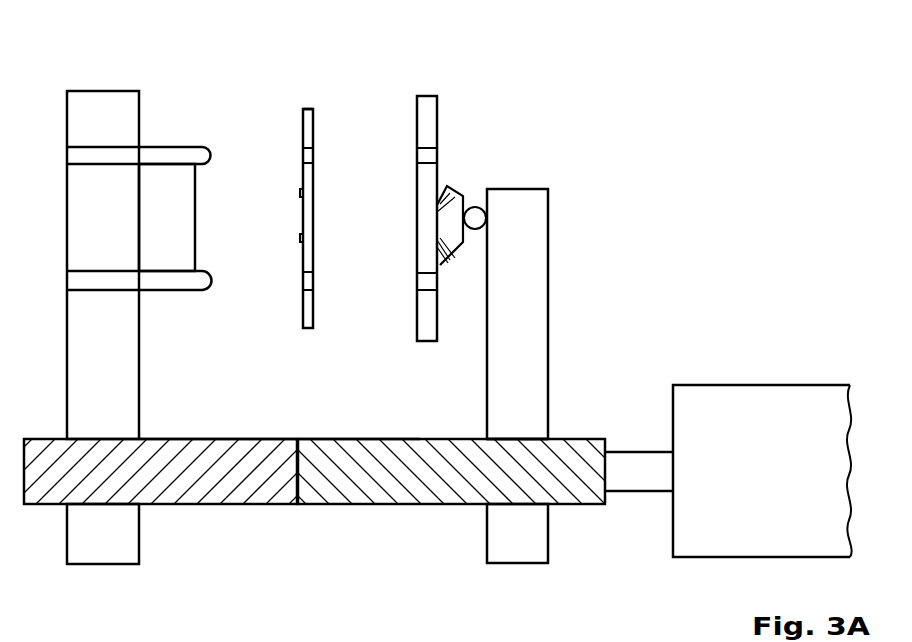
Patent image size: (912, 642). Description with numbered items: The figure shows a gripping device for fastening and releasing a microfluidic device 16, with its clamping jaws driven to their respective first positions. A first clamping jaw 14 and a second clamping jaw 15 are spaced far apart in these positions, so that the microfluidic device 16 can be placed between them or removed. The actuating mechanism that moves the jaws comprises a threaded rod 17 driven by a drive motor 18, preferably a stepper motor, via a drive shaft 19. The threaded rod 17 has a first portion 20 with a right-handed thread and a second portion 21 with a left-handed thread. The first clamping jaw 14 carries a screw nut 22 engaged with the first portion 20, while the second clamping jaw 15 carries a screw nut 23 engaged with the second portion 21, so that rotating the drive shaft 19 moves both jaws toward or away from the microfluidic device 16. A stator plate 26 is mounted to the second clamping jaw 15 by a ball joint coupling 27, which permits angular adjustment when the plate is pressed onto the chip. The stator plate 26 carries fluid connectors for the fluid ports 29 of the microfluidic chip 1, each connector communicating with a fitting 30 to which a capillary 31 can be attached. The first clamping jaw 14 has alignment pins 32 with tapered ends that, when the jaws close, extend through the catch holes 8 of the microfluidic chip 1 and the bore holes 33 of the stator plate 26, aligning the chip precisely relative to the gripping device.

The microfluidic chip 1 is at (313, 313).
The catch holes 8 is at (312, 157).
The first clamping jaw 14 is at (126, 380).
The second clamping jaw 15 is at (535, 295).
The microfluidic device 16 is at (311, 104).
The threaded rod 17 is at (348, 437).
The drive motor 18 is at (703, 395).
The drive shaft 19 is at (640, 460).
The first portion 20 is at (245, 490).
The second portion 21 is at (355, 497).
The screw nut 22 is at (140, 437).
The screw nut 23 is at (497, 437).
The stator plate 26 is at (427, 108).
The ball joint coupling 27 is at (473, 230).
The fluid ports 29 is at (312, 193).
The fitting 30 is at (452, 192).
The capillary 31 is at (442, 186).
The alignment pins 32 is at (203, 148).
The bore holes 33 is at (422, 155).